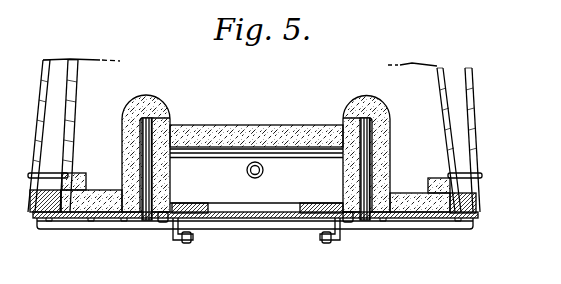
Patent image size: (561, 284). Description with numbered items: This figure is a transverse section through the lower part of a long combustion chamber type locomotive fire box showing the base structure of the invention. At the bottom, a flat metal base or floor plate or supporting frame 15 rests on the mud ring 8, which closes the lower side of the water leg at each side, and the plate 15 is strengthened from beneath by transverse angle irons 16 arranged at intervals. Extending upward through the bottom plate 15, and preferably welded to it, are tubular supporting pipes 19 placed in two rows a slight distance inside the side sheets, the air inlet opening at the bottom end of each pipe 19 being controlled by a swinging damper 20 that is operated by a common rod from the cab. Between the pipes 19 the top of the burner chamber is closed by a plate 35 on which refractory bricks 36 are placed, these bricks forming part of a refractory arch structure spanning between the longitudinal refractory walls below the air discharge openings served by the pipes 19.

The mud ring 8 is at (478, 203).
The flat metal base or floor plate or supporting frame 15 is at (82, 216).
The transverse angle irons 16 is at (110, 224).
The tubular supporting pipes 19 is at (138, 155).
The swinging damper 20 is at (147, 221).
The plate 35 is at (193, 148).
The refractory bricks 36 is at (249, 135).